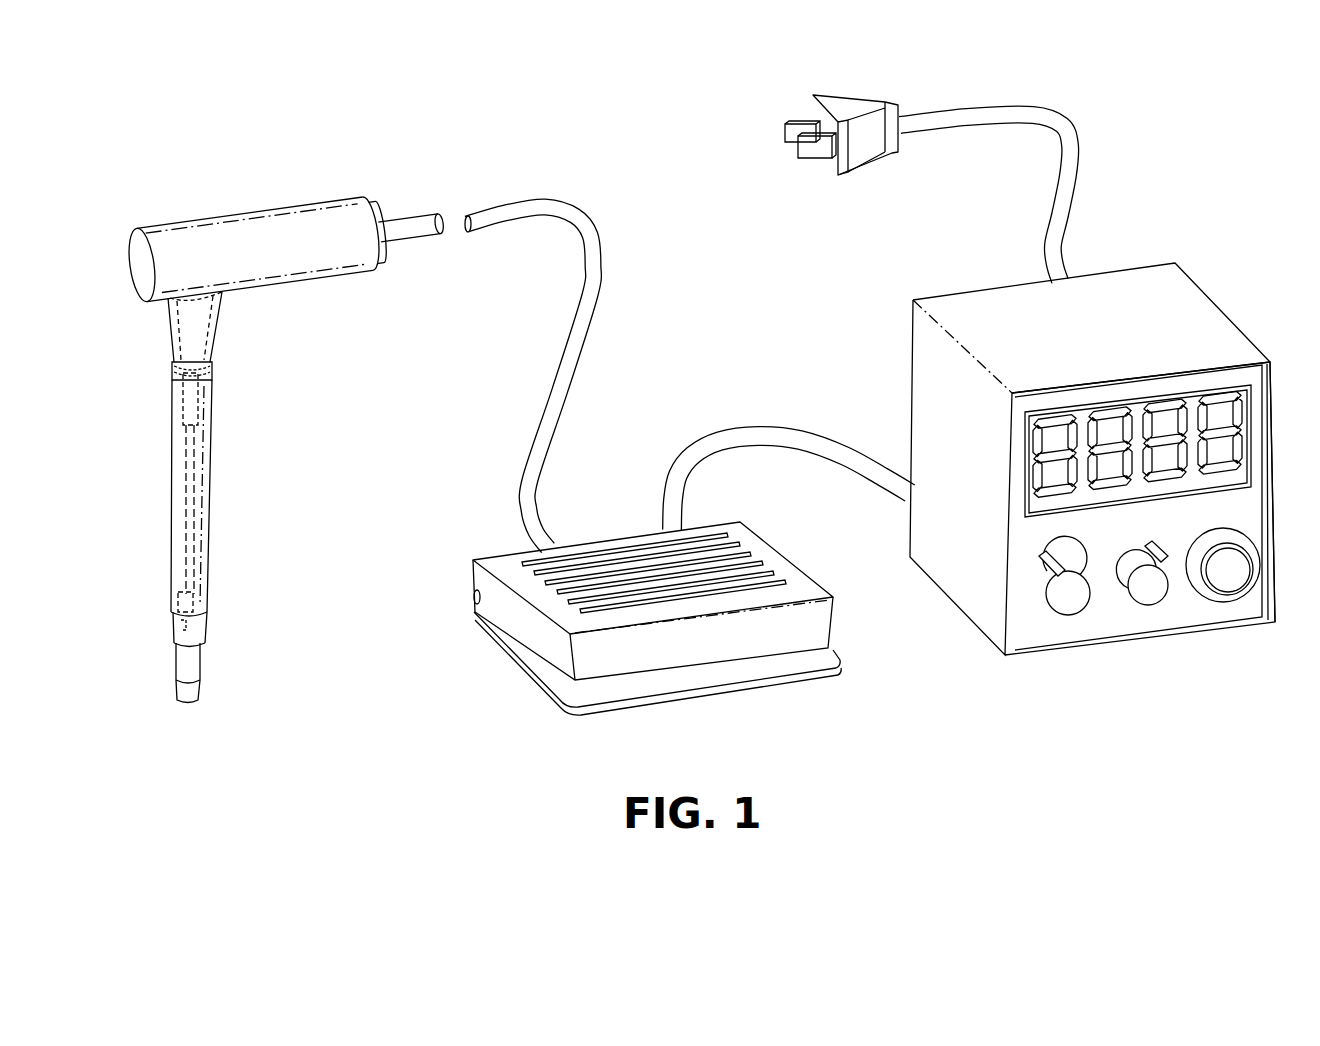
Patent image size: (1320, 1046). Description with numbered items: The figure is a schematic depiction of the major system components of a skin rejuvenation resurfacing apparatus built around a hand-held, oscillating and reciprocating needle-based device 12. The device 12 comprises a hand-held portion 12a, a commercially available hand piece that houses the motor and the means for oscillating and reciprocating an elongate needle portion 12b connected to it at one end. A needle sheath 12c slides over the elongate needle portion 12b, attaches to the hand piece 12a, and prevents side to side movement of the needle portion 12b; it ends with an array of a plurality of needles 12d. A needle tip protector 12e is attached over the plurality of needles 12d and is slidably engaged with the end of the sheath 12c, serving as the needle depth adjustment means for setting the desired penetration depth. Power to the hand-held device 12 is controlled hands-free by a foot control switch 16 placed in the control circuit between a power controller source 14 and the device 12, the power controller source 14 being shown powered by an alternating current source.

The needle-based device 12 is at (262, 330).
The hand-held portion 12a is at (270, 258).
The elongate needle portion 12b is at (193, 498).
The needle sheath 12c is at (212, 428).
The plurality of needles 12d is at (182, 700).
The needle tip protector 12e is at (203, 665).
The power controller source 14 is at (1120, 640).
The foot control switch 16 is at (755, 688).